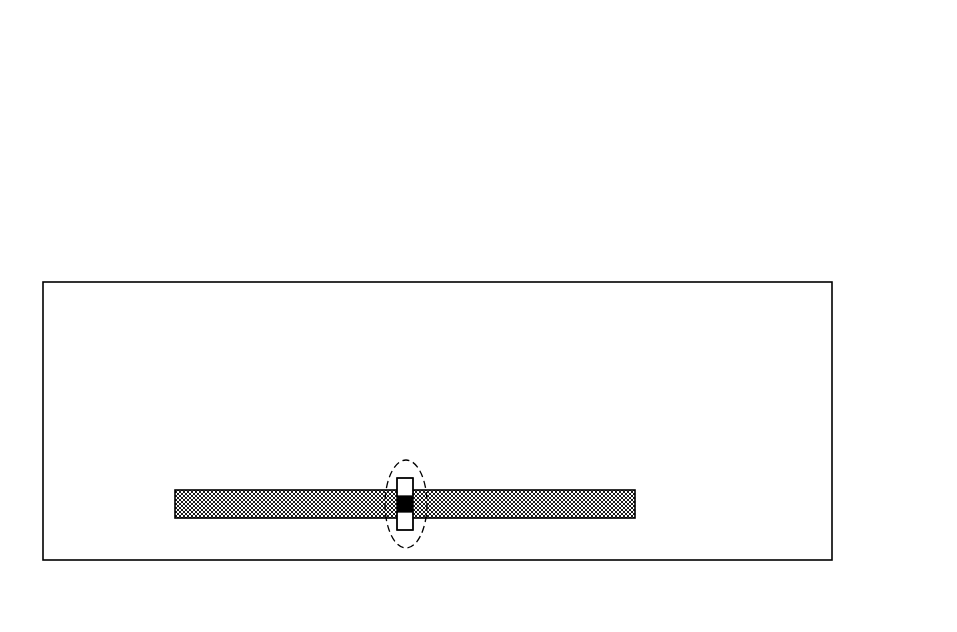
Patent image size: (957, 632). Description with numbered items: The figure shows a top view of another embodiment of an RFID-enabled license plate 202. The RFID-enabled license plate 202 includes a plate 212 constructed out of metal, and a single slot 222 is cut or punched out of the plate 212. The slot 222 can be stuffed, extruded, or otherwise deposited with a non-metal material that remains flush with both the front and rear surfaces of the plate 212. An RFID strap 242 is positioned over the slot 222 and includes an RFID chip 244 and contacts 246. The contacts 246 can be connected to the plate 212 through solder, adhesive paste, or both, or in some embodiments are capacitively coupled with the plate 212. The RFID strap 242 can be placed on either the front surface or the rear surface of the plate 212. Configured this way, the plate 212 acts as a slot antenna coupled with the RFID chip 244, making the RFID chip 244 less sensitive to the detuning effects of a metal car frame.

The RFID-enabled license plate 202 is at (164, 231).
The plate 212 is at (677, 282).
The slot 222 is at (611, 490).
The RFID strap 242 is at (413, 463).
The RFID chip 244 is at (415, 500).
The contacts 246 is at (394, 521).